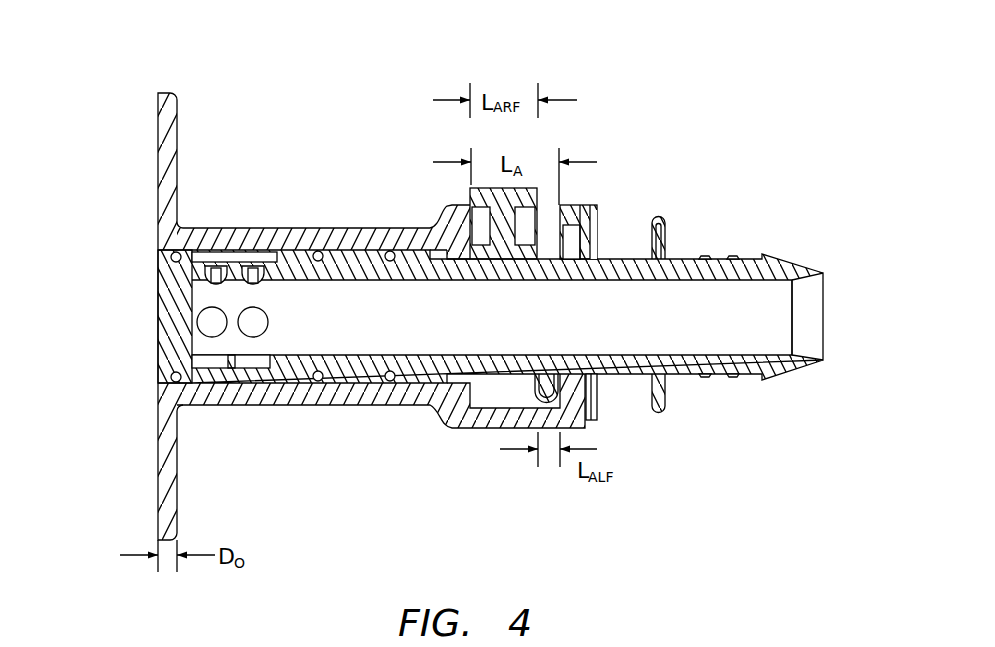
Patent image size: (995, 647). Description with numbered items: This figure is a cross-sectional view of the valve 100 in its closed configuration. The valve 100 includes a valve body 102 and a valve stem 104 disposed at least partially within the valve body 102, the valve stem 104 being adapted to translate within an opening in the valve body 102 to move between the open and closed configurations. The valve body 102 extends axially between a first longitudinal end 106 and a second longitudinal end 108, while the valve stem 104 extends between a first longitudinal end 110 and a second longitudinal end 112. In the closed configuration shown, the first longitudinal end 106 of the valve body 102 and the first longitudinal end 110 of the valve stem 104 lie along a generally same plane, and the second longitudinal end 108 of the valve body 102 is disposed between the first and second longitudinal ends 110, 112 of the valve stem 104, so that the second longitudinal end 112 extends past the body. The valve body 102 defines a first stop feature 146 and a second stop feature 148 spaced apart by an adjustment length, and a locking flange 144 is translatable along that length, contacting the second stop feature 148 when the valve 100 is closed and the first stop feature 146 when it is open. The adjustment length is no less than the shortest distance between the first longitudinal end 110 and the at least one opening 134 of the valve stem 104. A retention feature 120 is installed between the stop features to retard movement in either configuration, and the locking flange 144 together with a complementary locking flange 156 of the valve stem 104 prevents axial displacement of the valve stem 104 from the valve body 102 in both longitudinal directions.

The valve 100 is at (117, 43).
The valve body 102 is at (283, 240).
The valve stem 104 is at (687, 262).
The first longitudinal end 106 is at (158, 176).
The second longitudinal end 108 is at (600, 406).
The first longitudinal end 110 is at (158, 293).
The second longitudinal end 112 is at (826, 303).
The retention feature 120 is at (470, 200).
The opening 134 is at (208, 323).
The locking flange 144 is at (547, 397).
The first stop feature 146 is at (447, 216).
The second stop feature 148 is at (590, 210).
The complementary locking flange 156 is at (665, 227).